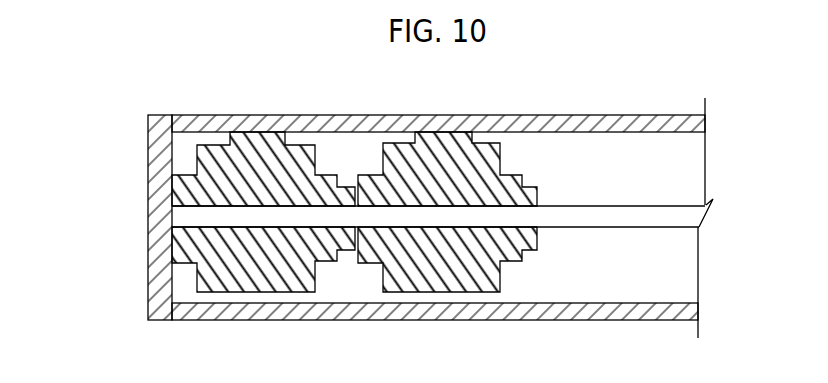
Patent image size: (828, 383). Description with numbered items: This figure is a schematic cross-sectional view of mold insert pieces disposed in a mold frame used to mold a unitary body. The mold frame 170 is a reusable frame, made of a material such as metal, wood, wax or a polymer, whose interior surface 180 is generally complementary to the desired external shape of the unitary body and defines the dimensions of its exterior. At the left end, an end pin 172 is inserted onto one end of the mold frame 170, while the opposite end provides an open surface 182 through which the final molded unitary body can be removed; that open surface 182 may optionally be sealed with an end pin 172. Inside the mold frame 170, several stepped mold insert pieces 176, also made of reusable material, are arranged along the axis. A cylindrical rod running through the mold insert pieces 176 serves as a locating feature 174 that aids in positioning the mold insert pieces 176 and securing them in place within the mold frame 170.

The mold frame 170 is at (577, 122).
The end pin 172 is at (158, 145).
The locating feature 174 is at (615, 217).
The mold insert piece 176 is at (245, 252).
The interior surface 180 is at (325, 125).
The open surface 182 is at (658, 165).